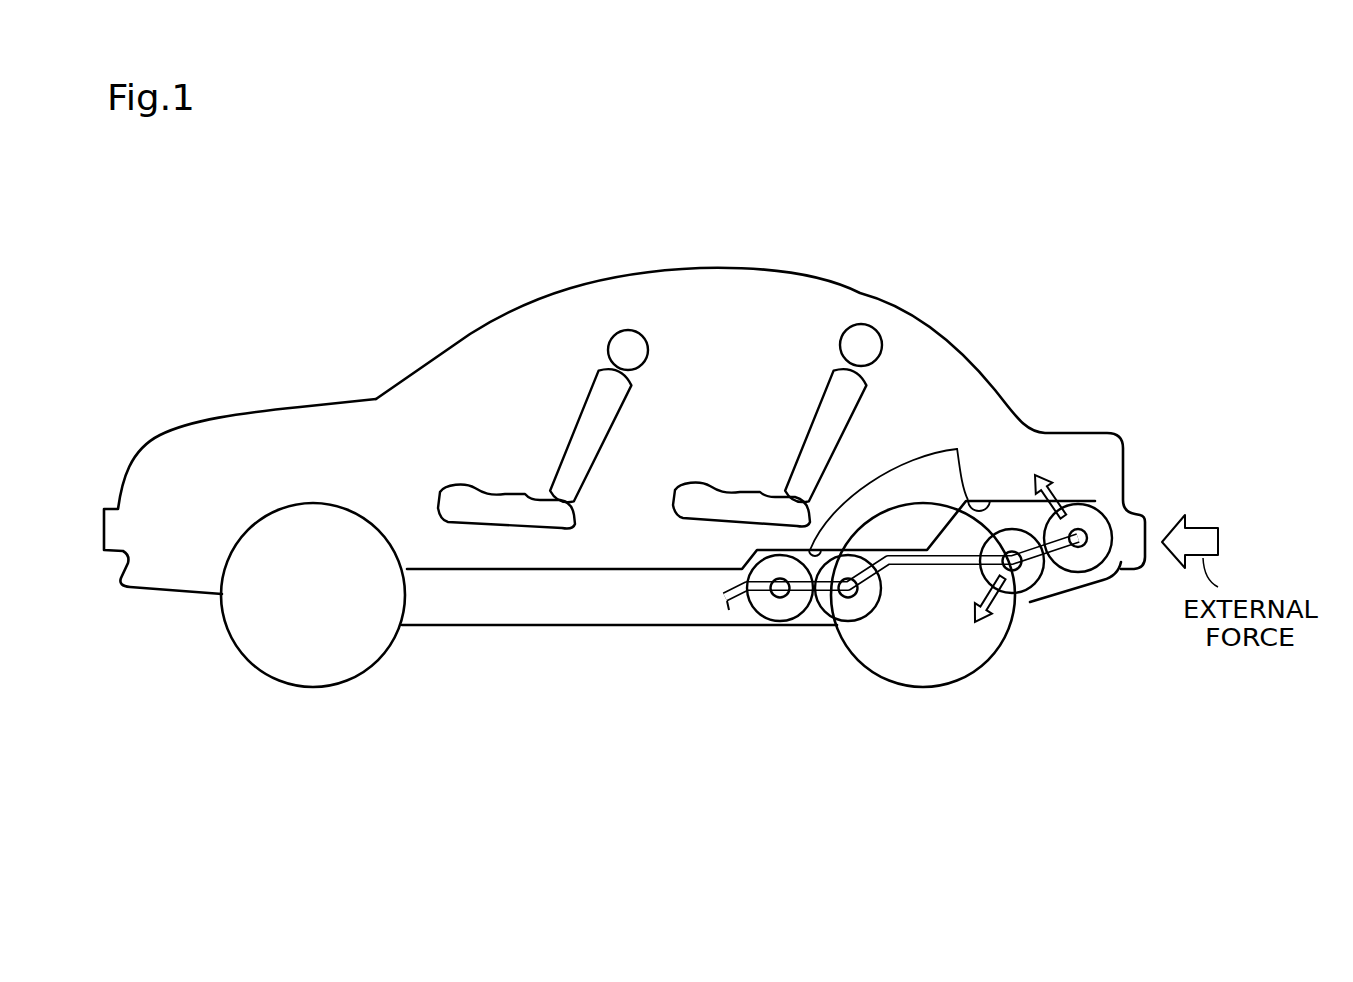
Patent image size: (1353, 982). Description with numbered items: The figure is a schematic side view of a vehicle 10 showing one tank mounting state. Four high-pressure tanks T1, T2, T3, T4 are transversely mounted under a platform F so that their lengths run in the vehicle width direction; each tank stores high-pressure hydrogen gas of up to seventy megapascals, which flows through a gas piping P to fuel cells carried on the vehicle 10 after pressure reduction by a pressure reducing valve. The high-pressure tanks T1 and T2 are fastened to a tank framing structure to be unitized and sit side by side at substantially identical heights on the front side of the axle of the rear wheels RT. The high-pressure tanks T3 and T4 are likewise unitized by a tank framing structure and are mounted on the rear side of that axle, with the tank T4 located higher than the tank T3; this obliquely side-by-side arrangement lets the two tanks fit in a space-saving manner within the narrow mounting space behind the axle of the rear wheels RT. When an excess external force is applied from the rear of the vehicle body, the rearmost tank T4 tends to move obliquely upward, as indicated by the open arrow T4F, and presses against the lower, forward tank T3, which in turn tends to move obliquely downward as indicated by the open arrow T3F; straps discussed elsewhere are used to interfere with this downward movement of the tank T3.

The vehicle 10 is at (1008, 258).
The gas piping P is at (935, 565).
The high-pressure tank T1 is at (772, 607).
The high-pressure tank T2 is at (827, 607).
The high-pressure tank T3 is at (1025, 585).
The high-pressure tank T4 is at (1087, 558).
The open arrow T3F is at (966, 594).
The open arrow T4F is at (1042, 478).
The platform F is at (899, 490).
The rear wheels RT is at (977, 663).